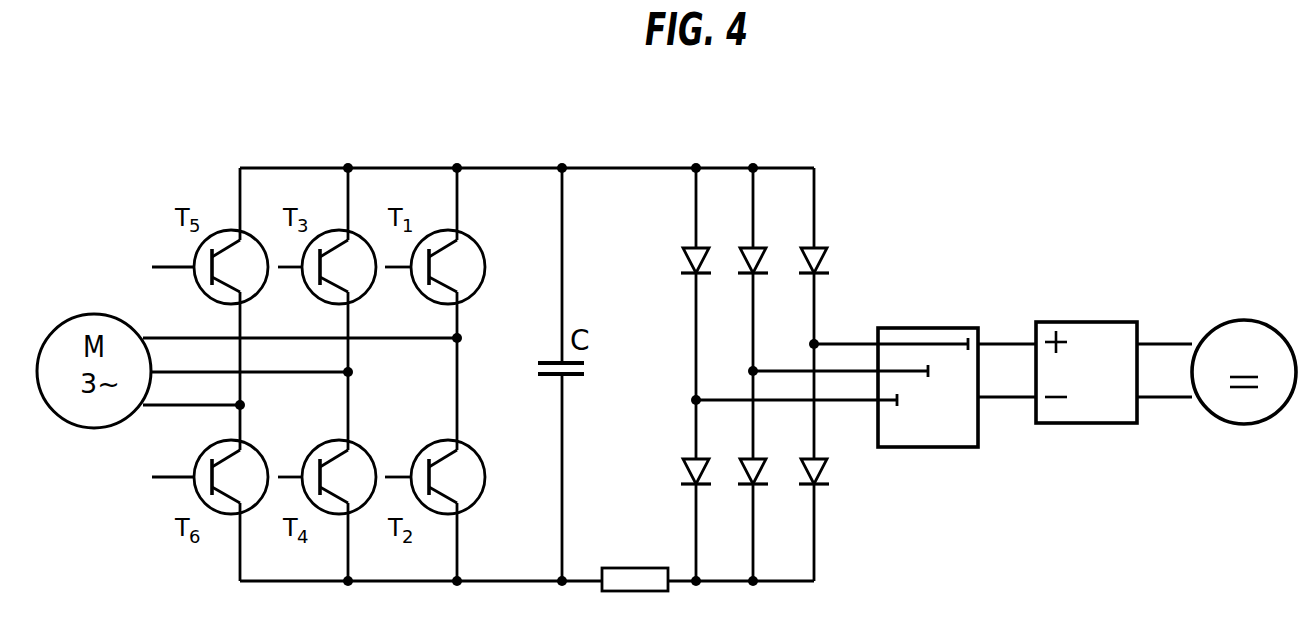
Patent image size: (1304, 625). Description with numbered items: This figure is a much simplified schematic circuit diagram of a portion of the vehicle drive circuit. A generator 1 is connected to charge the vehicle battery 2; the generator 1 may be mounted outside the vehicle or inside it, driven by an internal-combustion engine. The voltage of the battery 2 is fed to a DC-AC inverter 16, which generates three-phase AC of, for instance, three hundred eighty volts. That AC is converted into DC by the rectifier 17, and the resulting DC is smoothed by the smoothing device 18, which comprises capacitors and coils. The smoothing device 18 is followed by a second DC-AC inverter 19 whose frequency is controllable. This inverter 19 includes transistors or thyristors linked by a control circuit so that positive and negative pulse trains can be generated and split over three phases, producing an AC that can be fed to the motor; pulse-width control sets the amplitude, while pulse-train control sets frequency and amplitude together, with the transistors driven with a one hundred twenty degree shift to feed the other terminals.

The generator 1 is at (1244, 320).
The vehicle battery 2 is at (1074, 322).
The DC-AC inverter 16 is at (932, 328).
The rectifier 17 is at (696, 160).
The smoothing device 18 is at (471, 160).
The DC-AC inverter 19 is at (330, 160).